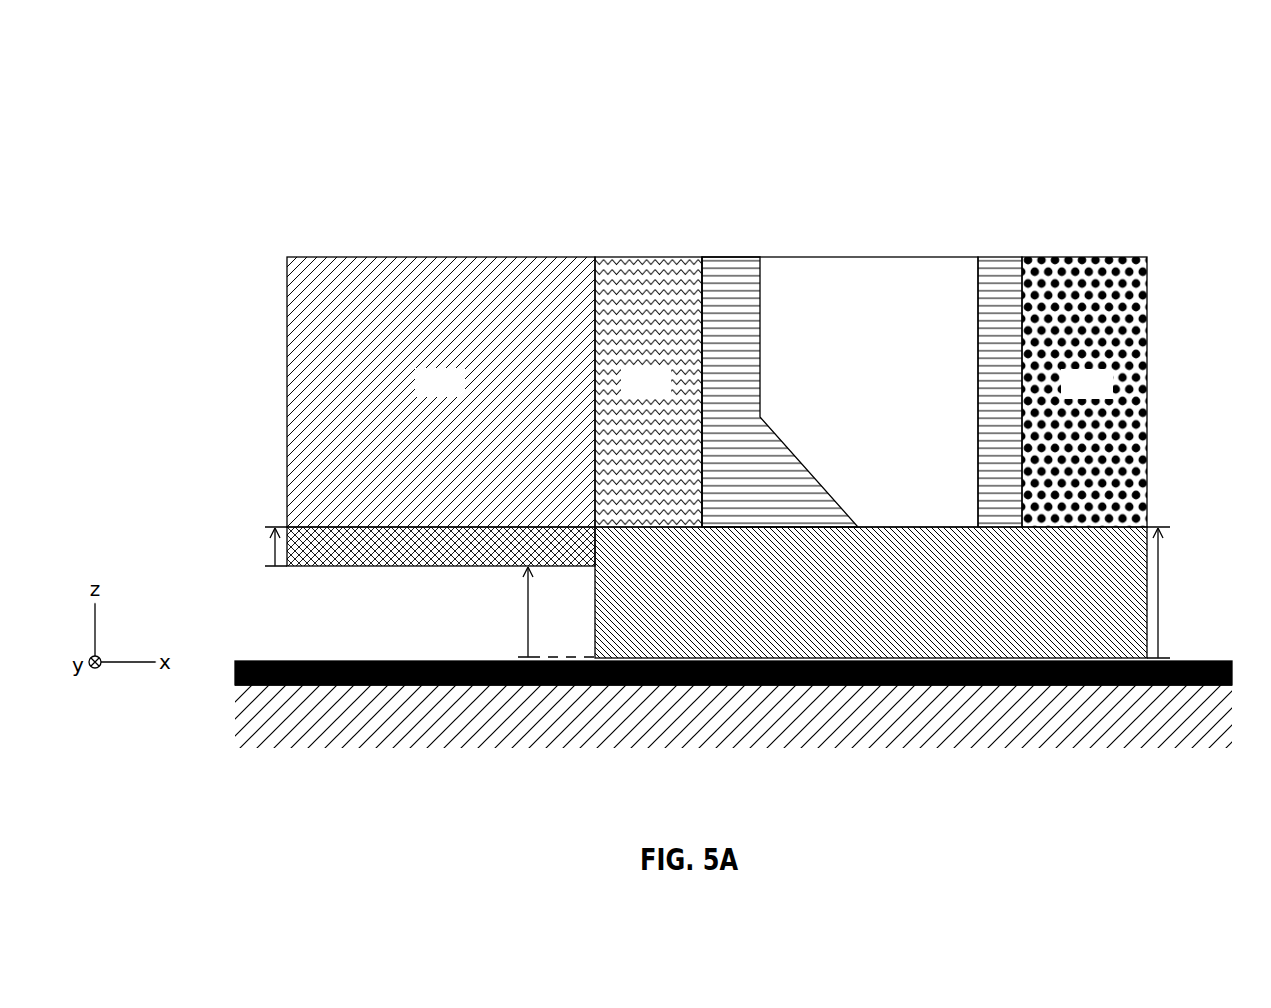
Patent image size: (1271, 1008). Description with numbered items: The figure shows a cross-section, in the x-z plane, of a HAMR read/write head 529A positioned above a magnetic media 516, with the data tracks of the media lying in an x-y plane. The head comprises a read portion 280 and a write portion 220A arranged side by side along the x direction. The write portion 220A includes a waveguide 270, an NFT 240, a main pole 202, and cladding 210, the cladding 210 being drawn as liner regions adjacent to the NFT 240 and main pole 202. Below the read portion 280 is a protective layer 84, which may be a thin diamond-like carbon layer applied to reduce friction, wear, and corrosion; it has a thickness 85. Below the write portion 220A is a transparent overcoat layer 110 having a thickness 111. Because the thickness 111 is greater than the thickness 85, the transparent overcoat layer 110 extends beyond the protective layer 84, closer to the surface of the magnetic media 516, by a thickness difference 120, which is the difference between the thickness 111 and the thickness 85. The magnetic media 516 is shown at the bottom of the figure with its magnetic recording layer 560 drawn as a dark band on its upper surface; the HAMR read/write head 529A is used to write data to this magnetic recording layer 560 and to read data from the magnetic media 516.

The HAMR read/write head 529A is at (528, 111).
The write portion 220A is at (878, 216).
The cladding 210 is at (1005, 257).
The read portion 280 is at (461, 397).
The waveguide 270 is at (667, 399).
The NFT 240 is at (883, 399).
The main pole 202 is at (1108, 397).
The thickness 85 is at (263, 546).
The protective layer 84 is at (403, 566).
The transparent overcoat layer 110 is at (595, 628).
The thickness difference 120 is at (520, 595).
The thickness 111 is at (1158, 588).
The magnetic recording layer 560 is at (307, 658).
The magnetic media 516 is at (959, 760).